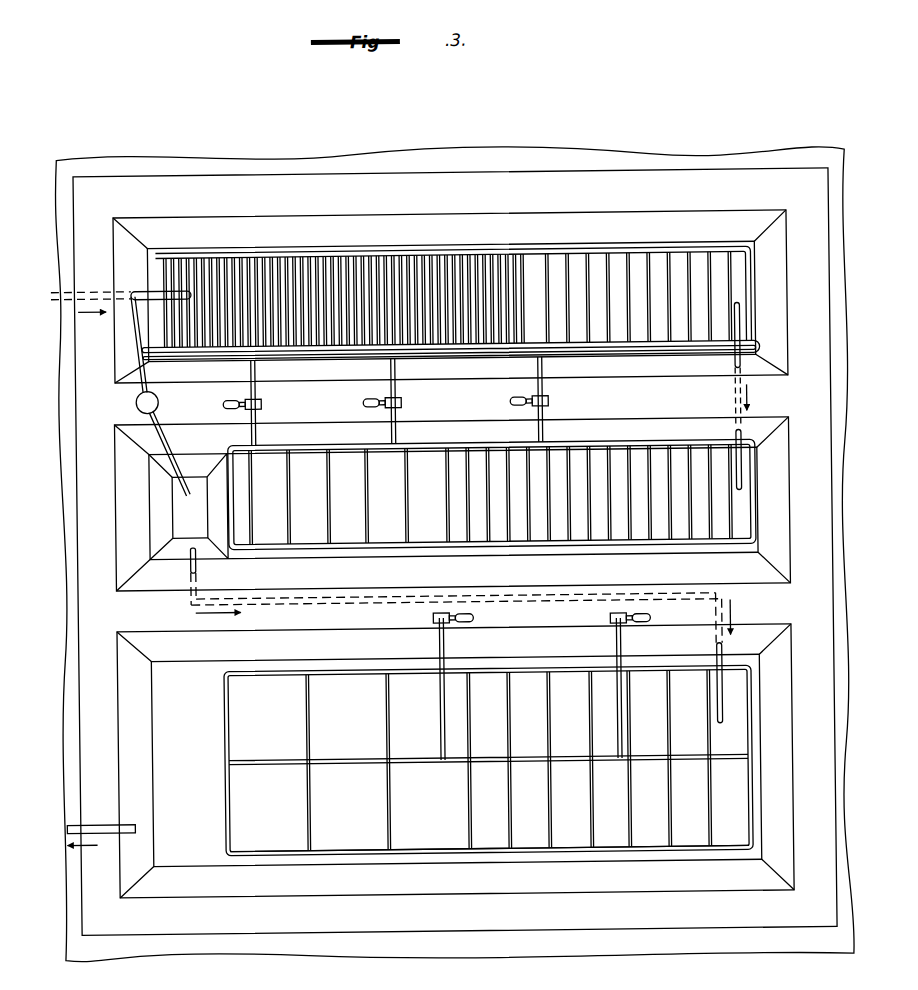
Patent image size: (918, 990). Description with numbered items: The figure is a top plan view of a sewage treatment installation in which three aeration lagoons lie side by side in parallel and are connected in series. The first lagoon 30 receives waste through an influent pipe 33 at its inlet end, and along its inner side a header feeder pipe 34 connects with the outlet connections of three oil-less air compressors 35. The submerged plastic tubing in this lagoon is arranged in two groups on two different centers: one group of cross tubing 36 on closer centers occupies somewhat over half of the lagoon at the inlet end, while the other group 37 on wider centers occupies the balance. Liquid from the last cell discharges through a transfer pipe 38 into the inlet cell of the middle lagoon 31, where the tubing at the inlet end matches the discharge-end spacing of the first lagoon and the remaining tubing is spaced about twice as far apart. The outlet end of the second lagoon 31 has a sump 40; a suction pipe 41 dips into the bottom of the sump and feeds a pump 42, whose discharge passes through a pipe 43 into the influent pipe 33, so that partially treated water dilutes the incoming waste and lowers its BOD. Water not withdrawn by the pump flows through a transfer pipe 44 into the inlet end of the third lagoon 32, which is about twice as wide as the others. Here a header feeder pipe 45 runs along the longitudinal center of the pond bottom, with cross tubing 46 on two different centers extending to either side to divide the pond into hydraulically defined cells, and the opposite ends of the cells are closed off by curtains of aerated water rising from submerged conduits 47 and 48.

The first lagoon 30 is at (687, 233).
The second lagoon 31 is at (778, 458).
The third lagoon 32 is at (745, 885).
The influent pipe 33 is at (92, 292).
The header feeder pipe 34 is at (430, 358).
The oil-less air compressors 35 is at (259, 406).
The first group of cross tubing 36 is at (352, 275).
The second group of cross tubing 37 is at (587, 274).
The transfer pipe 38 is at (730, 400).
The sump 40 is at (166, 512).
The suction pipe 41 is at (156, 420).
The pump 42 is at (134, 400).
The pipe 43 is at (131, 327).
The transfer pipe 44 is at (315, 608).
The header feeder pipe 45 is at (358, 762).
The cross tubing 46 is at (305, 710).
The submerged conduit 47 is at (337, 863).
The submerged conduit 48 is at (342, 672).